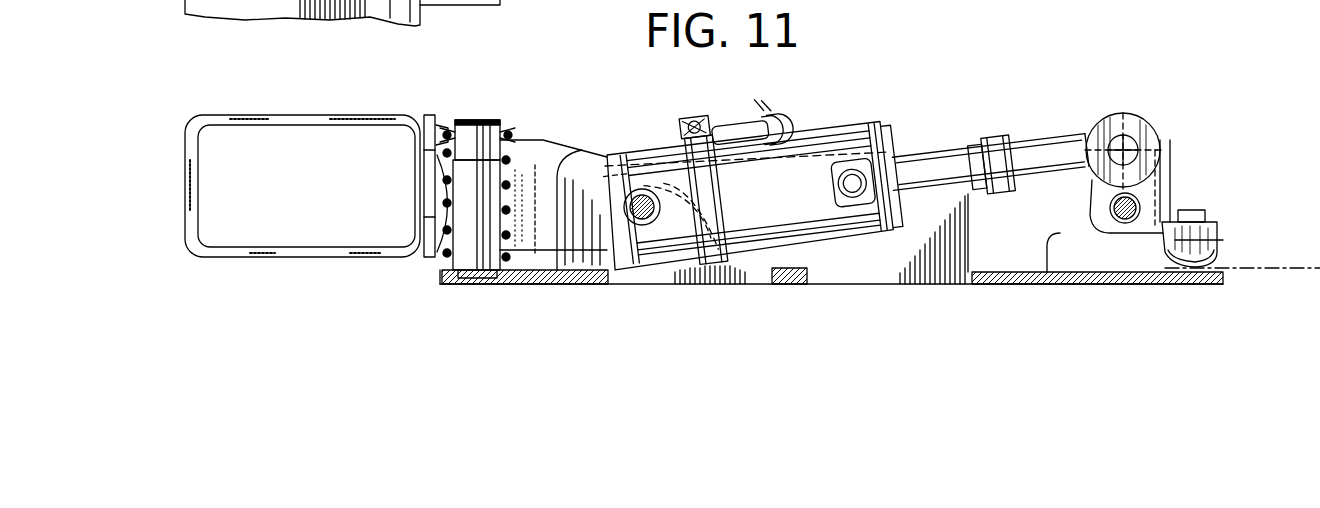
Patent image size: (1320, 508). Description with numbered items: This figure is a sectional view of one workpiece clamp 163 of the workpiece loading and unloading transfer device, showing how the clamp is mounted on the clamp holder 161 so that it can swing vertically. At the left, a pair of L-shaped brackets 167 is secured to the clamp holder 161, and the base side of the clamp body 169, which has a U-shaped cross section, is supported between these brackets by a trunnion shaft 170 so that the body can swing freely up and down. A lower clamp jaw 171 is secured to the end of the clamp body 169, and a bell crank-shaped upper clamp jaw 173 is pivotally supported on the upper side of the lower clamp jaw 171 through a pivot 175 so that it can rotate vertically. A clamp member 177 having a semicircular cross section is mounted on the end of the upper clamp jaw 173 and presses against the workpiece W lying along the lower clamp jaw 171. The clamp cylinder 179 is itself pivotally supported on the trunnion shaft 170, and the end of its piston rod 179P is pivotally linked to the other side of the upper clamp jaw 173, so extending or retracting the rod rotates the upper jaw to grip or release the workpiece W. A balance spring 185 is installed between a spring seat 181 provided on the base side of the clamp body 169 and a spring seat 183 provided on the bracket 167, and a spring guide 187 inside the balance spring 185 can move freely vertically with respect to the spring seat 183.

The clamp holder 161 is at (305, 259).
The workpiece clamp 163 is at (1198, 137).
The L-shaped bracket 167 is at (565, 152).
The clamp body 169 is at (848, 270).
The trunnion shaft 170 is at (645, 218).
The lower clamp jaw 171 is at (1188, 285).
The upper clamp jaw 173 is at (1172, 186).
The pivot 175 is at (1108, 208).
The clamp member 177 is at (1216, 263).
The clamp cylinder 179 is at (847, 126).
The piston rod 179P is at (935, 156).
The spring seat 181 is at (531, 284).
The spring seat 183 is at (505, 128).
The balance spring 185 is at (440, 183).
The spring guide 187 is at (478, 272).
The workpiece W is at (1305, 275).